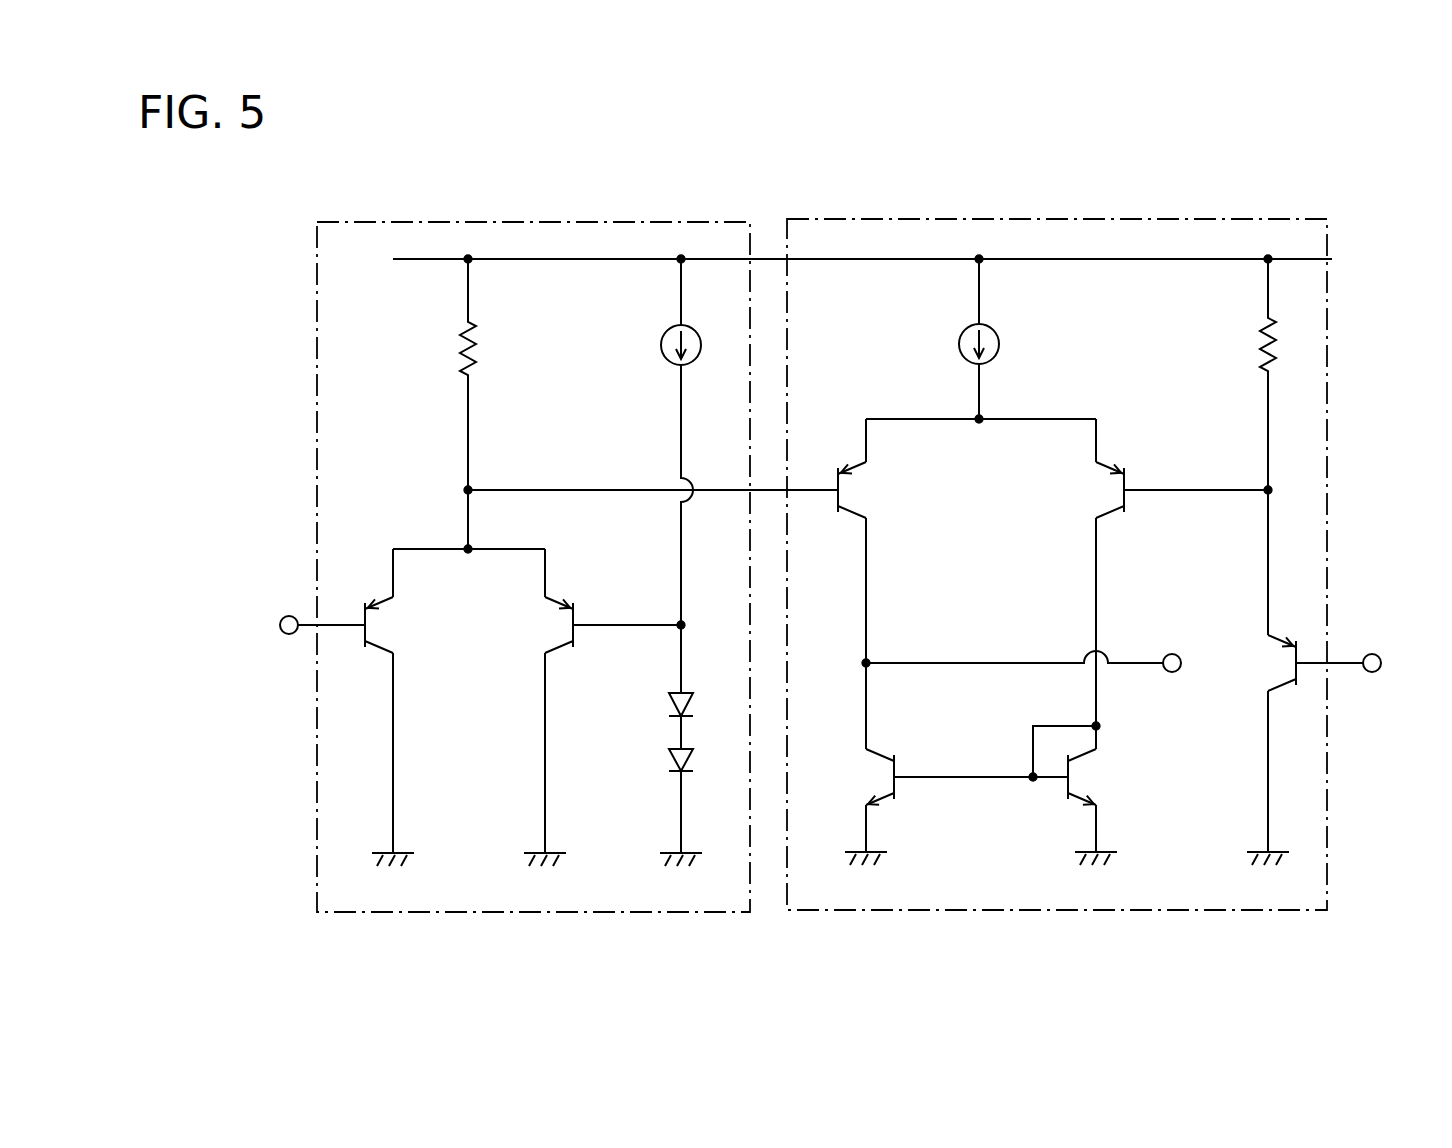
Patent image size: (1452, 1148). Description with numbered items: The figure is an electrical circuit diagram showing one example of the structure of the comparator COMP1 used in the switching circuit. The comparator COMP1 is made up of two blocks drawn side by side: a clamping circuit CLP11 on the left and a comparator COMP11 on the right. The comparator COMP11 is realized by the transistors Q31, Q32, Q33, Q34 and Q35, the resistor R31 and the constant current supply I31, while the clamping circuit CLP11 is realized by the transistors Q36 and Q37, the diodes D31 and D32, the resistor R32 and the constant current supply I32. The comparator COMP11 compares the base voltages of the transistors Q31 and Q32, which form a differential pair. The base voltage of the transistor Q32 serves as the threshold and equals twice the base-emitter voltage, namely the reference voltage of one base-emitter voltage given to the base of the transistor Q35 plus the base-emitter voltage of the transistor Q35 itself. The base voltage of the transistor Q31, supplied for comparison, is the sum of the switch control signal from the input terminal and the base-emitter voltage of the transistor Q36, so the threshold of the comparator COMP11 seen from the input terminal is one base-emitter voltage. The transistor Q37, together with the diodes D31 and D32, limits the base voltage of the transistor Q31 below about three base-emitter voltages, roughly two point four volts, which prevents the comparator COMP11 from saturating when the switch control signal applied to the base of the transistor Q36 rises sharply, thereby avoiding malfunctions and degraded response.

The comparator COMP1 is at (270, 255).
The clamping circuit CLP11 is at (530, 220).
The comparator COMP11 is at (1045, 219).
The resistor R32 is at (462, 346).
The constant current supply I32 is at (661, 345).
The transistor Q36 is at (368, 631).
The transistor Q37 is at (571, 629).
The diode D31 is at (672, 706).
The diode D32 is at (672, 761).
The constant current supply I31 is at (999, 346).
The transistor Q31 is at (840, 497).
The transistor Q32 is at (1122, 493).
The transistor Q33 is at (891, 779).
The transistor Q34 is at (1070, 783).
The resistor R31 is at (1262, 346).
The transistor Q35 is at (1292, 664).